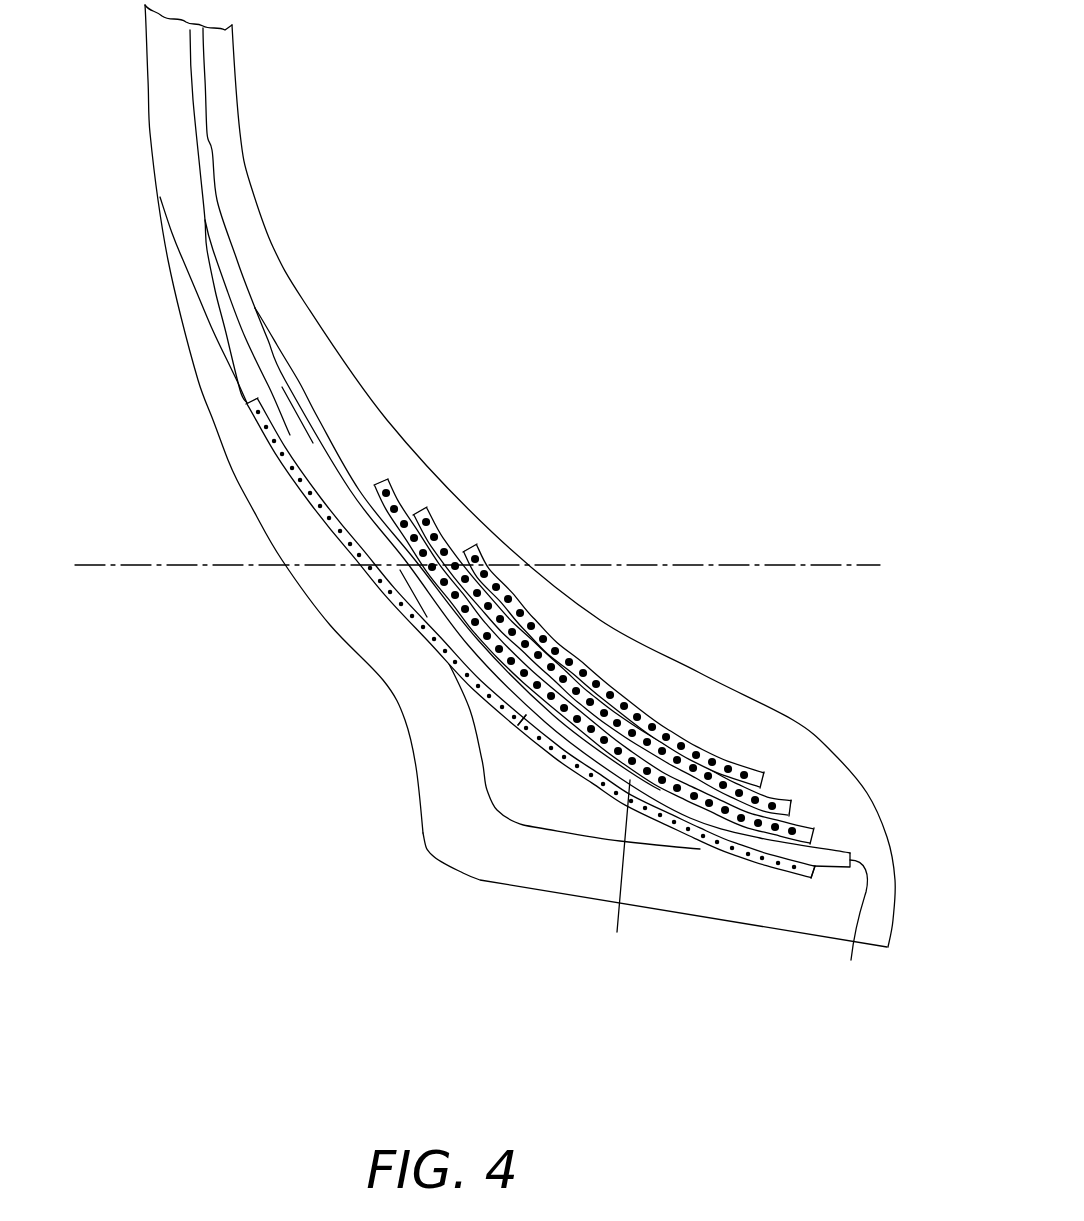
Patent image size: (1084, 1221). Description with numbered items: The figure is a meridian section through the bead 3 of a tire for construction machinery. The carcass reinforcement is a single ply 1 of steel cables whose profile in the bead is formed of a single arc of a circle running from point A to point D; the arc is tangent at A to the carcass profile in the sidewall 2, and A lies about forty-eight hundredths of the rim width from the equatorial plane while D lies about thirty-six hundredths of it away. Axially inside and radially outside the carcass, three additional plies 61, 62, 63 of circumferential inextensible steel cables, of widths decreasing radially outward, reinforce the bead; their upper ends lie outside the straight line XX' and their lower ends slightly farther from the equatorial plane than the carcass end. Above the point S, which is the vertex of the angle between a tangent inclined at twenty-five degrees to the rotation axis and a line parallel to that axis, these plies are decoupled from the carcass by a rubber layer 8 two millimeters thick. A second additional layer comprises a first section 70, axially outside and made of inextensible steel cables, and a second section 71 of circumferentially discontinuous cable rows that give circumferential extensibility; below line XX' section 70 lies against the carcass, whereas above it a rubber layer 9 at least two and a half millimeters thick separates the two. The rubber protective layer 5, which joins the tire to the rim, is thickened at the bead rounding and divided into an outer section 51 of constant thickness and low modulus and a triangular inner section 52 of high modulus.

The carcass ply 1 is at (210, 175).
The sidewall 2 is at (182, 212).
The bead 3 is at (770, 737).
The rubber protective layer 5 is at (447, 783).
The layer of rubber 8 is at (318, 418).
The layer of rubber mix 9 is at (295, 448).
The outer section 51 is at (535, 862).
The inner section 52 is at (517, 797).
The additional ply 61 is at (400, 510).
The additional ply 62 is at (447, 547).
The additional ply 63 is at (563, 650).
The first section 70 is at (437, 647).
The second section 71 is at (723, 848).
The point A is at (398, 568).
The point S is at (618, 874).
The point D is at (855, 939).
The straight line XX' X is at (477, 589).